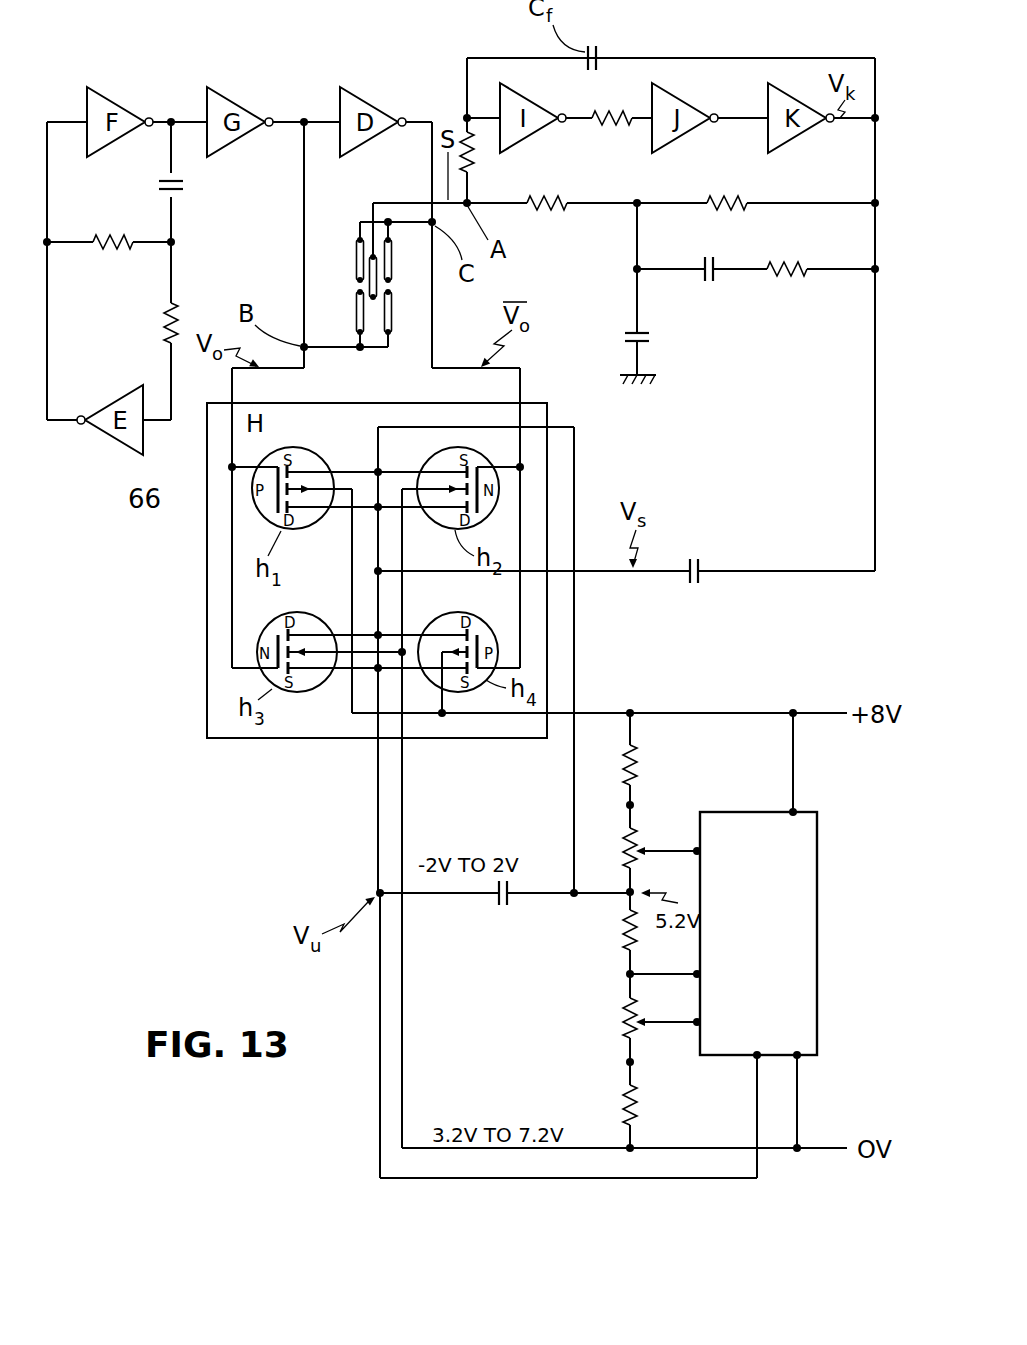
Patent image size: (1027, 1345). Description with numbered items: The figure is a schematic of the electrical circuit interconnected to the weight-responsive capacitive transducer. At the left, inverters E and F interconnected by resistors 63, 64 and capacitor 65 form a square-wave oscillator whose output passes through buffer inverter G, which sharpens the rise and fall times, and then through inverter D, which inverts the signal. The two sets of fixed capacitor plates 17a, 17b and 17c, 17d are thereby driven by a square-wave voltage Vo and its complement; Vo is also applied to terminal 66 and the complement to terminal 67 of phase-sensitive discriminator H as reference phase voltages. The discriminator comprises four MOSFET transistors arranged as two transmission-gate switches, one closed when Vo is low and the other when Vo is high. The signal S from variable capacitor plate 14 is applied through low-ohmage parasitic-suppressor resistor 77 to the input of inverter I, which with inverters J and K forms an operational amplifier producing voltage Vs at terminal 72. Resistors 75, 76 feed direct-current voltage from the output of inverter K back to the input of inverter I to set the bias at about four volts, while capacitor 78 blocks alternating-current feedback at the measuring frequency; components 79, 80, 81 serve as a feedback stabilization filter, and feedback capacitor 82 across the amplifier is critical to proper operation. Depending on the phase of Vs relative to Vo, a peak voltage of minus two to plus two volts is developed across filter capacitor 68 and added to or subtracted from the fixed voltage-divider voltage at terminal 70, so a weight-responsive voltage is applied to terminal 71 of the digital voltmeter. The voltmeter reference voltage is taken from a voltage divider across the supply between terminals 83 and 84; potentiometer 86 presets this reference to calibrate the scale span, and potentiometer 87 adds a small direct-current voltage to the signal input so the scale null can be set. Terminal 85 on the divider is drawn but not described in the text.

The variable capacitor plate 14 is at (370, 288).
The fixed capacitor plate 17a is at (356, 270).
The fixed capacitor plate 17b is at (356, 310).
The fixed capacitor plate 17c is at (418, 258).
The fixed capacitor plate 17d is at (392, 310).
The resistor 63 is at (163, 320).
The resistor 64 is at (101, 250).
The capacitor 65 is at (158, 192).
The terminal 66 is at (236, 465).
The terminal 67 is at (518, 463).
The filter capacitor 68 is at (497, 900).
The output terminal 70 is at (574, 900).
The terminal of digital voltmeter 71 is at (756, 1058).
The terminal 72 is at (376, 573).
The resistor 75 is at (548, 212).
The resistor 76 is at (728, 212).
The resistor 77 is at (470, 152).
The capacitor 78 is at (628, 342).
The resistor 79 is at (608, 125).
The capacitor 80 is at (703, 282).
The resistor 81 is at (788, 277).
The feedback capacitor 82 is at (605, 52).
The terminal 83 is at (697, 850).
The terminal 84 is at (697, 973).
The wiper tap 85 is at (697, 1026).
The potentiometer 86 is at (633, 850).
The potentiometer 87 is at (633, 1018).